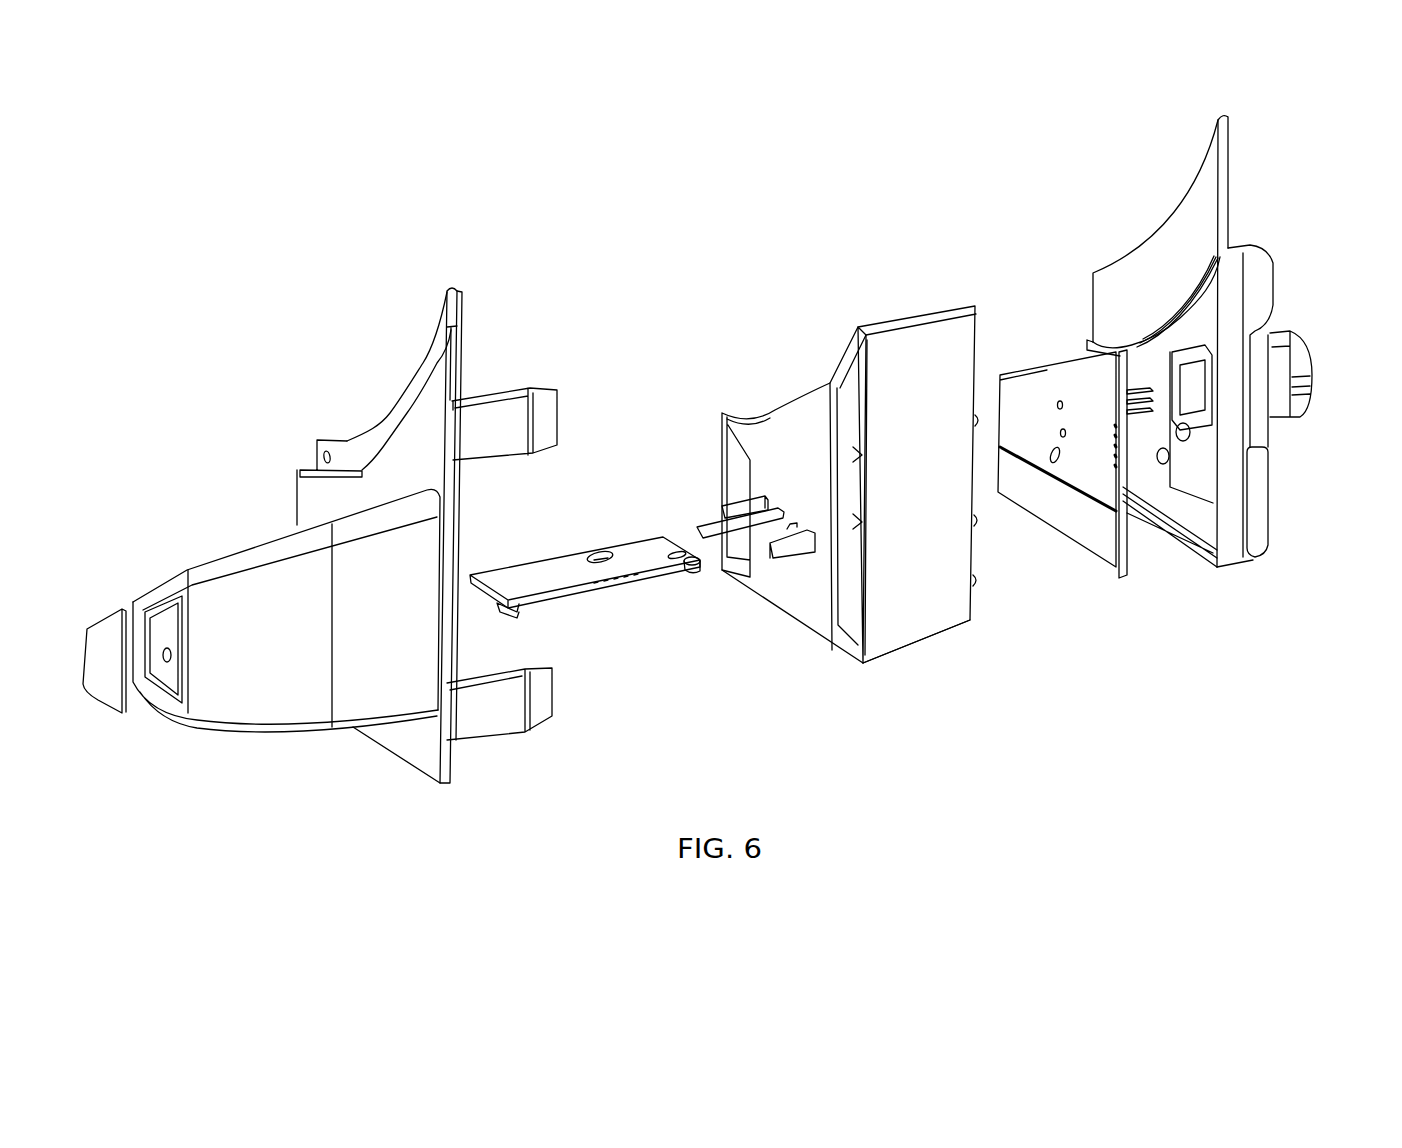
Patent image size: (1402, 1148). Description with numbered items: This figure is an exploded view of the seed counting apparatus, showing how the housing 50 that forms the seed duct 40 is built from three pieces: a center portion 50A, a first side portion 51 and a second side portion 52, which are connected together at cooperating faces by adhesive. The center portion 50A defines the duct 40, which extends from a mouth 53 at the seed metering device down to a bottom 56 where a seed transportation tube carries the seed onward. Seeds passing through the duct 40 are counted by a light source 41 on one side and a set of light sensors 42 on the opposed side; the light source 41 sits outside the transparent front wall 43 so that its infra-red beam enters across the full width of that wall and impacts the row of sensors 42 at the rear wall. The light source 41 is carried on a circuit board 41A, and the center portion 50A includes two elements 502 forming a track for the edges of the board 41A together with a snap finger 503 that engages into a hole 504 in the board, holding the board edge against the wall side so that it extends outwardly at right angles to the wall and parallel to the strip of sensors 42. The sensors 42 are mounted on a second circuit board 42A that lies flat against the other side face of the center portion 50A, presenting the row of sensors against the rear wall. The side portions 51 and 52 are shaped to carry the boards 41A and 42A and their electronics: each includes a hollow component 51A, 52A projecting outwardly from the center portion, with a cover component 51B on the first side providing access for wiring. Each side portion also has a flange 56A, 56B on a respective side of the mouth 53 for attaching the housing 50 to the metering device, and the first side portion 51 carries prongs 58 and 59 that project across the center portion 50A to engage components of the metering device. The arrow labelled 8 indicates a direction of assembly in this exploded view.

The insertion direction 8 is at (478, 608).
The duct 40 is at (800, 580).
The light source 41 is at (585, 567).
The circuit board 41A is at (642, 547).
The light sensors 42 is at (1063, 487).
The circuit board 42A is at (1125, 480).
The front wall 43 is at (772, 583).
The housing 50 is at (820, 486).
The center portion 50A is at (892, 345).
The first side portion 51 is at (307, 560).
The hollow component 51A is at (234, 583).
The cover component 51B is at (102, 632).
The second side portion 52 is at (1185, 384).
The hollow component 52A is at (1265, 483).
The mouth 53 is at (757, 408).
The bottom 56 is at (910, 643).
The flange 56A is at (380, 425).
The flange 56B is at (1127, 290).
The prong 58 is at (490, 715).
The prong 59 is at (516, 413).
The elements 502 is at (743, 507).
The snap finger 503 is at (817, 478).
The hole 504 is at (600, 553).